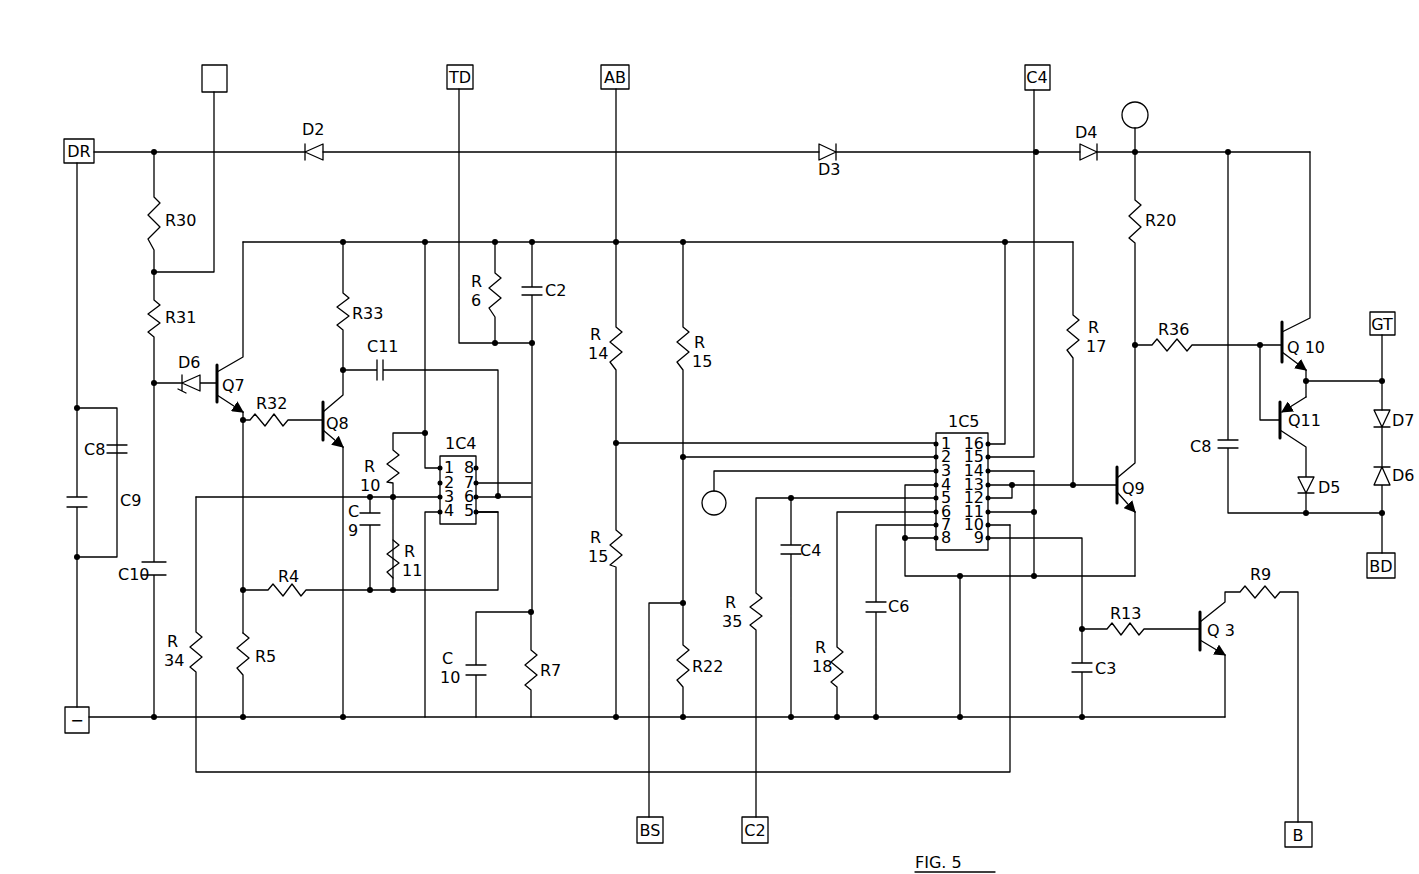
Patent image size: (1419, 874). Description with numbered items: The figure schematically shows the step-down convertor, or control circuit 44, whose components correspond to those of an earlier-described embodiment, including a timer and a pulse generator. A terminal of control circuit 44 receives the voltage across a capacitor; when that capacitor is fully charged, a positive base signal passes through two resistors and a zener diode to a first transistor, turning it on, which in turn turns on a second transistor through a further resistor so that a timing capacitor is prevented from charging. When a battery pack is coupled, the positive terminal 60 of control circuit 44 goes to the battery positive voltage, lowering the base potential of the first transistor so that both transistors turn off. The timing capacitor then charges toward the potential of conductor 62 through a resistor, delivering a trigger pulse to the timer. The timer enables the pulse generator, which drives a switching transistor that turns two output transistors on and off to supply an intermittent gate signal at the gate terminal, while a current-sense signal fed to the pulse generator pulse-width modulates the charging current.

The positive terminal 60 is at (224, 66).
The conductor 62 is at (560, 242).
The step-down convertor 44 is at (783, 127).